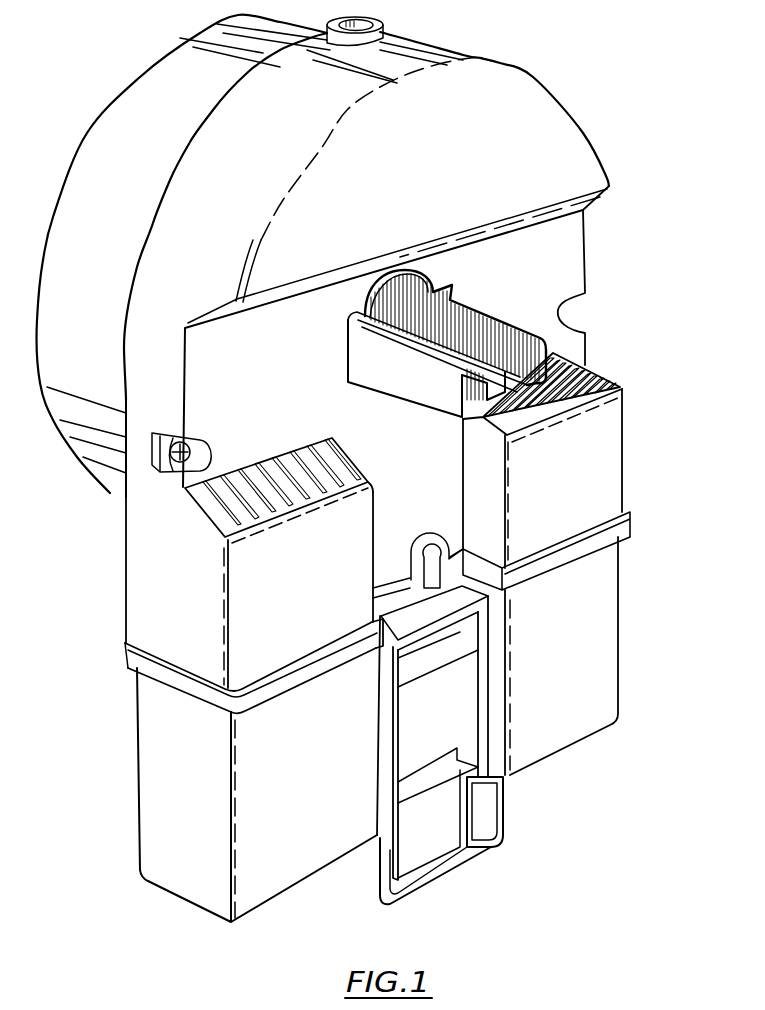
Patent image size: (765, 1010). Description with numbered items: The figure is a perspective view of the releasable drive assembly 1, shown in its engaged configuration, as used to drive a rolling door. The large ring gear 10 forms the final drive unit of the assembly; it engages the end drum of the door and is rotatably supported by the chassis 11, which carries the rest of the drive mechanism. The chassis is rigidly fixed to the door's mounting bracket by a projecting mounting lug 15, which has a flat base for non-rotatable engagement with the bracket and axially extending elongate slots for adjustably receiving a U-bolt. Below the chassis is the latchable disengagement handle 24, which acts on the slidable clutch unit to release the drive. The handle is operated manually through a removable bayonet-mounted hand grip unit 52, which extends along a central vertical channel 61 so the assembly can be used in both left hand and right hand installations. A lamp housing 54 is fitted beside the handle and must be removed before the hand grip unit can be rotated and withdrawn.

The releasable drive assembly 1 is at (543, 117).
The ring gear 10 is at (110, 147).
The chassis 11 is at (493, 330).
The mounting lug 15 is at (440, 395).
The latchable disengagement handle 24 is at (491, 807).
The hand grip unit 52 is at (453, 863).
The lamp housing 54 is at (157, 820).
The central vertical channel 61 is at (484, 551).